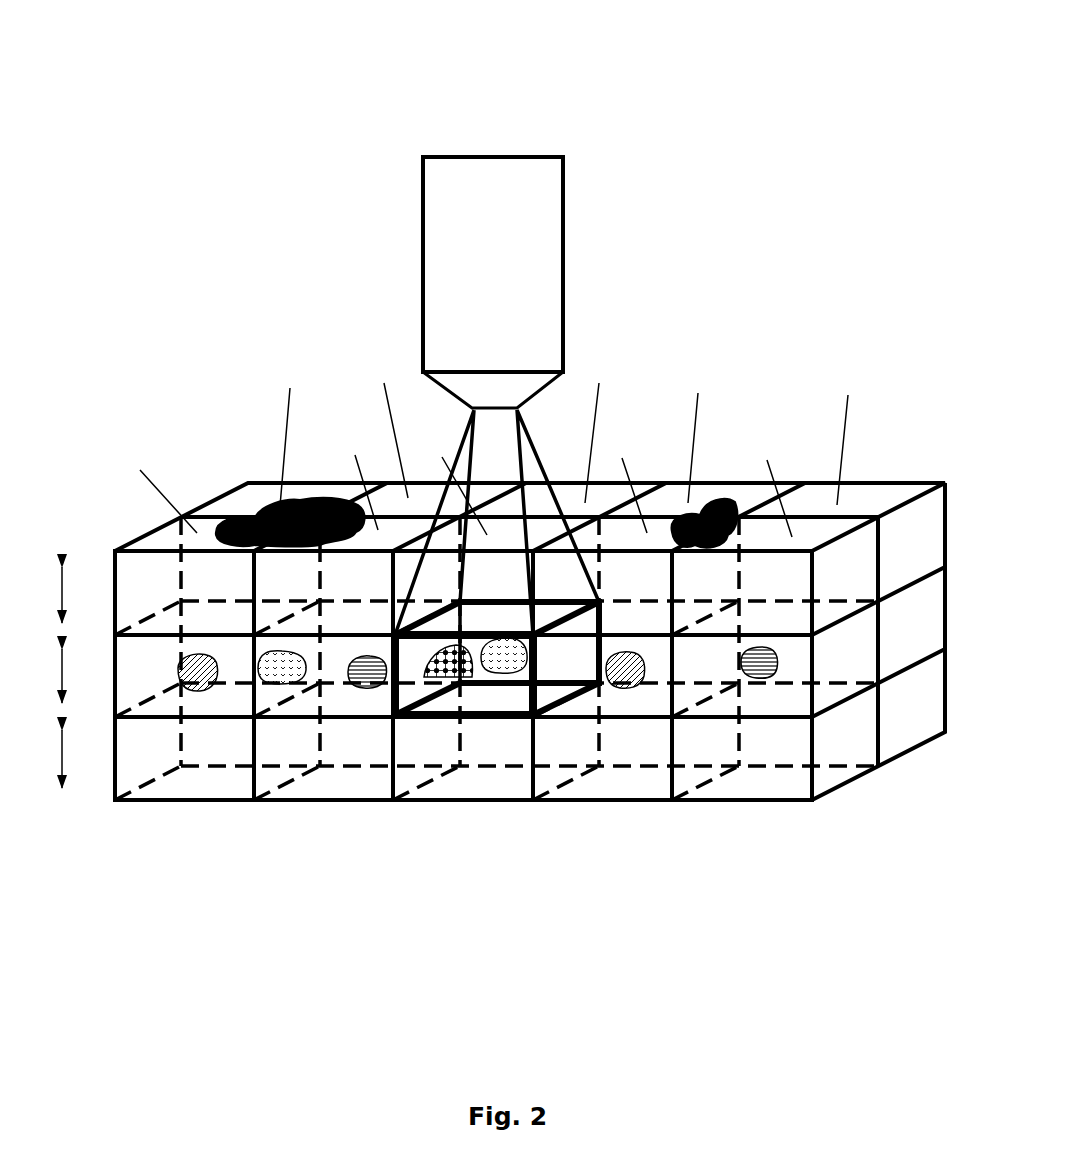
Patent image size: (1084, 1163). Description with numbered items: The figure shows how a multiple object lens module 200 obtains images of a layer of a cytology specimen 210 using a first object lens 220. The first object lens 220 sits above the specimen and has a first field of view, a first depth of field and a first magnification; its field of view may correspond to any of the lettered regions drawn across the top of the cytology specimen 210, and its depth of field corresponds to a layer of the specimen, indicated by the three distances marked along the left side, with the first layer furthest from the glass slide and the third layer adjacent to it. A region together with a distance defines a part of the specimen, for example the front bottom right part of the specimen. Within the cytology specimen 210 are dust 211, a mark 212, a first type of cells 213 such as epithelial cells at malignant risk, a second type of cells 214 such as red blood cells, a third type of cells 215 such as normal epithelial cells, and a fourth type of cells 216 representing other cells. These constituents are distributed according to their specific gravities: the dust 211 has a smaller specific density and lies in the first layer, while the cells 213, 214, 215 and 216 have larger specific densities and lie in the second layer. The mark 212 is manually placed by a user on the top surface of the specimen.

The multiple object lens module 200 is at (240, 108).
The cytology specimen 210 is at (223, 460).
The dust 211 is at (240, 512).
The mark 212 is at (725, 497).
The first type of cells 213 is at (205, 697).
The second type of cells 214 is at (282, 689).
The third type of cells 215 is at (359, 689).
The fourth type of cells 216 is at (464, 682).
The first object lens 220 is at (572, 237).